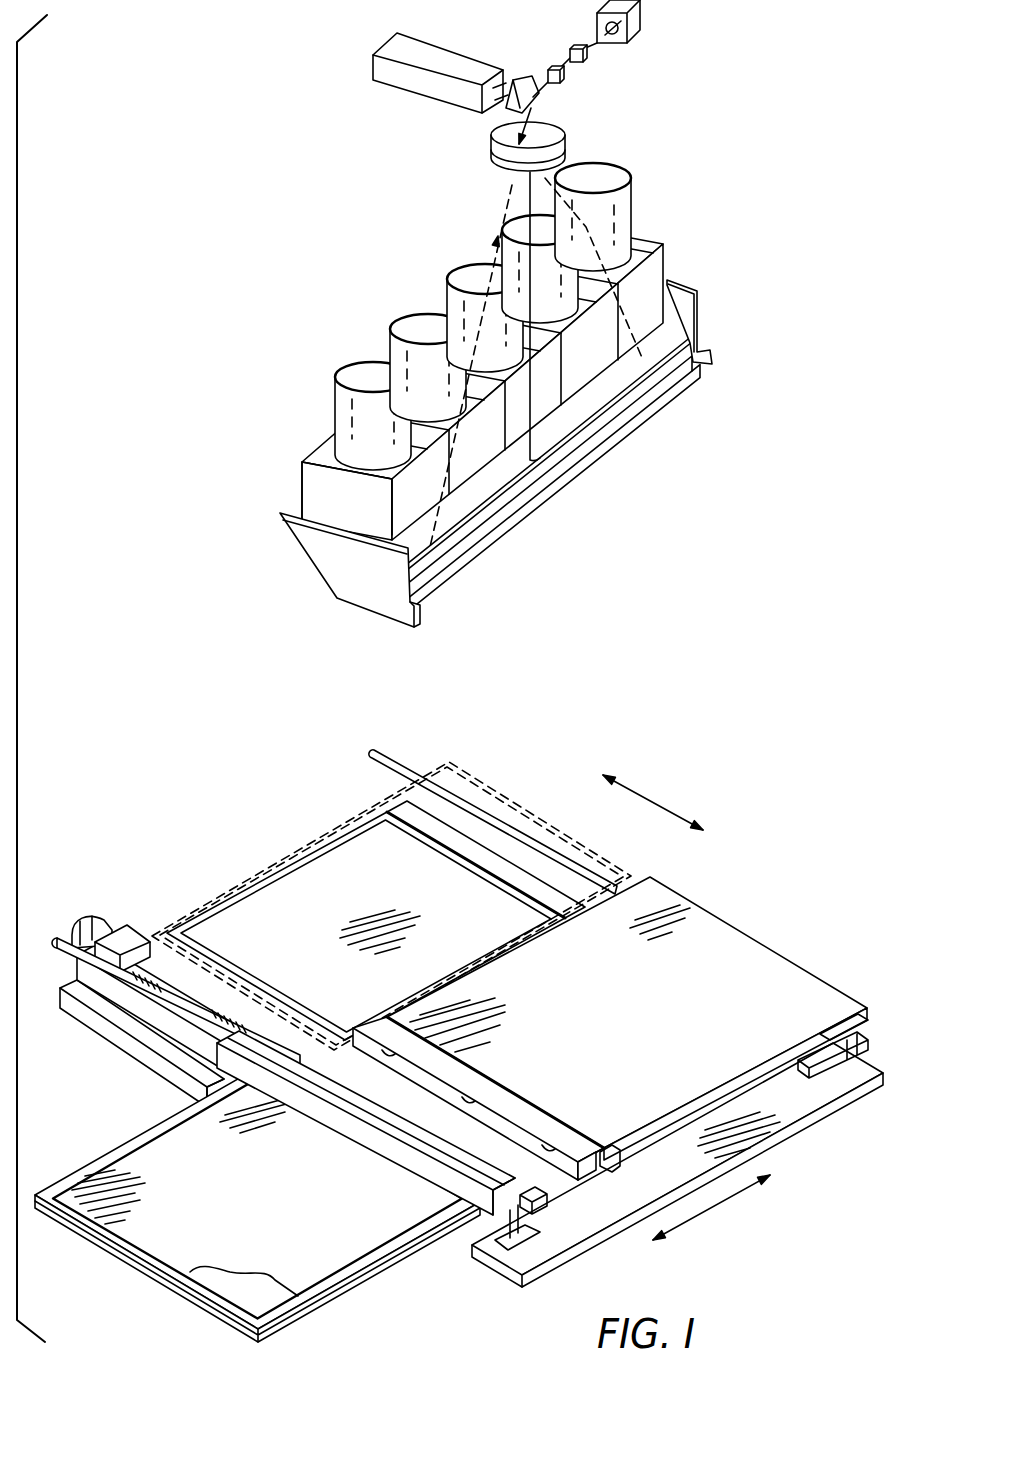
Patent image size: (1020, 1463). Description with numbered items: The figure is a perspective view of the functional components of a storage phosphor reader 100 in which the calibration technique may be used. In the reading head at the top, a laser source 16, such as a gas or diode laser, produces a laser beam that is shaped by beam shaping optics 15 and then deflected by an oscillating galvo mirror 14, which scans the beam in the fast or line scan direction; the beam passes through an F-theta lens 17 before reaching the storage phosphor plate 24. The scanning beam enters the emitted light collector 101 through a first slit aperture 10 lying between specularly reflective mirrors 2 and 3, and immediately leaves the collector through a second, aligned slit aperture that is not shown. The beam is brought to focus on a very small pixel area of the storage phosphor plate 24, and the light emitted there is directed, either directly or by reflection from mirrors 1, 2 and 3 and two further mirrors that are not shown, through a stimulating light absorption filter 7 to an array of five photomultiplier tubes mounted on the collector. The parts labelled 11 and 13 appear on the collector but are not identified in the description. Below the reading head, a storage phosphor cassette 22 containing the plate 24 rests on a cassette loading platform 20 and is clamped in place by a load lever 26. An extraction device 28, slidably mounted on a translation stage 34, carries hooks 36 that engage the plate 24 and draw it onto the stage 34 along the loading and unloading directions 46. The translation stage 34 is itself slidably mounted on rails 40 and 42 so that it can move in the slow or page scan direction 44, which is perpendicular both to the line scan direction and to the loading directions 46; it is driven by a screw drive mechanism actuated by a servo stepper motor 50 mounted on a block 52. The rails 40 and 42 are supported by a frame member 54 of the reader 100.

The mirror 1 is at (467, 558).
The specularly reflective mirror 2 is at (510, 502).
The specularly reflective mirror 3 is at (600, 387).
The stimulating light absorption filter 7 is at (312, 488).
The first slit aperture 10 is at (580, 422).
The support rail 11 is at (533, 455).
The end plate 13 is at (338, 582).
The oscillating galvo mirror 14 is at (450, 58).
The beam shaping optics 15 is at (562, 78).
The laser source 16 is at (655, 0).
The F-theta lens 17 is at (491, 144).
The storage phosphor reader 100 is at (451, 317).
The emitted light collector 101 is at (451, 430).
The cassette loading platform 20 is at (367, 1272).
The storage phosphor cassette 22 is at (83, 1170).
The storage phosphor plate 24 is at (290, 880).
The load lever 26 is at (373, 1143).
The extraction device 28 is at (542, 1110).
The translation stage 34 is at (758, 945).
The hooks 36 is at (392, 1058).
The rail 40 is at (412, 752).
The rail 42 is at (65, 958).
The slow or page scan direction 44 is at (655, 802).
The directions of loading and unloading 46 is at (735, 1212).
The servo stepper motor 50 is at (98, 917).
The block 52 is at (137, 927).
The frame member 54 is at (847, 1098).